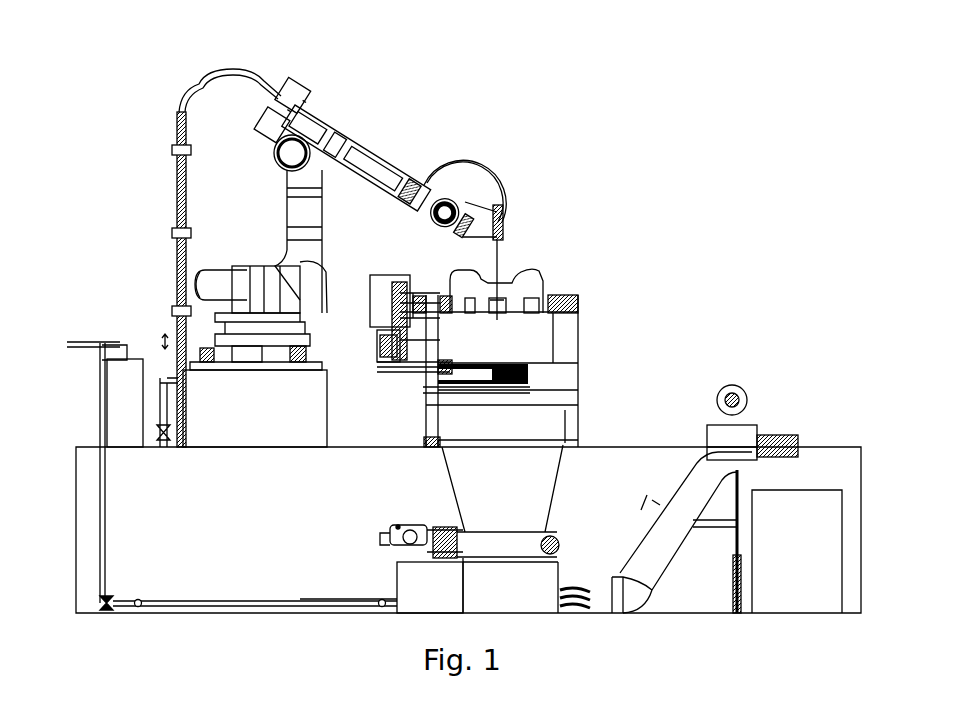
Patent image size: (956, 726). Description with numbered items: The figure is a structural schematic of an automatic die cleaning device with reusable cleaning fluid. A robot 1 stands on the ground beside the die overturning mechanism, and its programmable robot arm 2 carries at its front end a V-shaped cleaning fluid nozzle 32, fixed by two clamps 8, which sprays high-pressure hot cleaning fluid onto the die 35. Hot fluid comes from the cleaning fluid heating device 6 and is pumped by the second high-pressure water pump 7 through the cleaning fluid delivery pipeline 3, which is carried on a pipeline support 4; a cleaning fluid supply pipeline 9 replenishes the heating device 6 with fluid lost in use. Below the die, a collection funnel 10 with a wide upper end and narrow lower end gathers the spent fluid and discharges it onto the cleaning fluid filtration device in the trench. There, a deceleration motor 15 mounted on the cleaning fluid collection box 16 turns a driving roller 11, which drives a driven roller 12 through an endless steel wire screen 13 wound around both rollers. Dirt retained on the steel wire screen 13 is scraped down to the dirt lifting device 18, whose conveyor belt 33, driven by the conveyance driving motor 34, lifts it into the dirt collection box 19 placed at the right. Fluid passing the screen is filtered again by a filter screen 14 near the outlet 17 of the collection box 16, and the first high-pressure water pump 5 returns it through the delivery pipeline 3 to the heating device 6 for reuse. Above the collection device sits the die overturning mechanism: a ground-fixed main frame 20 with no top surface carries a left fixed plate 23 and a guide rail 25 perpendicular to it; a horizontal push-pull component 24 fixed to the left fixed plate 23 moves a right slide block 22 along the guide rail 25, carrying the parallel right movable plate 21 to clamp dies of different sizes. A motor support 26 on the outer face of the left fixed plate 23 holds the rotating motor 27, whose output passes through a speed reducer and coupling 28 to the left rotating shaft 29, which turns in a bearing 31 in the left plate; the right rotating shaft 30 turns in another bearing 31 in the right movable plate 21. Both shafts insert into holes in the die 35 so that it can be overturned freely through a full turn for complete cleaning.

The robot 1 is at (280, 235).
The robot arm 2 is at (350, 133).
The cleaning fluid delivery pipeline 3 is at (213, 77).
The pipeline support 4 is at (172, 250).
The first high-pressure water pump 5 is at (103, 603).
The cleaning fluid heating device 6 is at (120, 425).
The second high-pressure water pump 7 is at (150, 444).
The clamp 8 is at (178, 229).
The cleaning fluid supply pipeline 9 is at (120, 343).
The collection funnel 10 is at (520, 497).
The driving roller 11 is at (415, 530).
The driven roller 12 is at (560, 543).
The steel wire screen 13 is at (540, 530).
The filter screen 14 is at (445, 525).
The deceleration motor 15 is at (385, 535).
The cleaning fluid collection box 16 is at (422, 587).
The outlet 17 is at (380, 603).
The dirt lifting device 18 is at (752, 440).
The dirt collection box 19 is at (798, 538).
The main frame 20 is at (518, 410).
The right movable plate 21 is at (565, 340).
The right slide block 22 is at (563, 377).
The left fixed plate 23 is at (413, 365).
The horizontal push-pull component 24 is at (423, 389).
The guide rail 25 is at (427, 417).
The motor support 26 is at (380, 345).
The rotating motor 27 is at (378, 278).
The coupling 28 is at (395, 283).
The left rotating shaft 29 is at (450, 295).
The right rotating shaft 30 is at (578, 302).
The bearing 31 is at (580, 317).
The cleaning fluid nozzle 32 is at (501, 238).
The conveyor belt 33 is at (652, 525).
The conveyance driving motor 34 is at (737, 398).
The die 35 is at (537, 285).